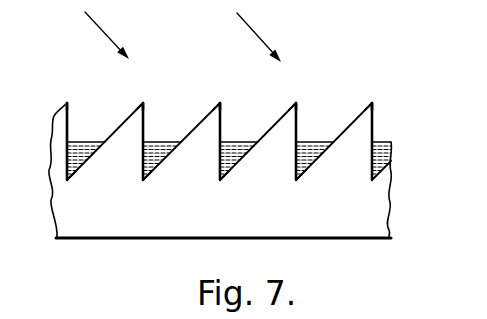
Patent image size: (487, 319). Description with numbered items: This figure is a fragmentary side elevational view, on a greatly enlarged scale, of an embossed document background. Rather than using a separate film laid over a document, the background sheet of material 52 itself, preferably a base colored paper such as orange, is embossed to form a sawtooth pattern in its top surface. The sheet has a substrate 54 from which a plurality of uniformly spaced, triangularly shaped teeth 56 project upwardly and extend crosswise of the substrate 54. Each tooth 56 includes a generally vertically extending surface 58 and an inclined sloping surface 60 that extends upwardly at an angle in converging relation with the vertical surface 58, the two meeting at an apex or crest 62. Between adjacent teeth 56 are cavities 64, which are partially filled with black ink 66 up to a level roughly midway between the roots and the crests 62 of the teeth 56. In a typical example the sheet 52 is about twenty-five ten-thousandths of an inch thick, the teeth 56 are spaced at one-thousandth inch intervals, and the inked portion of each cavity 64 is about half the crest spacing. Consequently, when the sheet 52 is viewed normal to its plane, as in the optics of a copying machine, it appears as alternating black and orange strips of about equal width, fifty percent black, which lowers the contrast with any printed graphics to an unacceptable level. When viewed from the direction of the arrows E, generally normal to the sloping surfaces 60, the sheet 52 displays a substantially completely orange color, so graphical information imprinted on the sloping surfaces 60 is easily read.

The background sheet of material 52 is at (108, 270).
The substrate 54 is at (323, 222).
The teeth 56 is at (187, 172).
The vertically extending surface 58 is at (77, 113).
The inclined sloping surface 60 is at (64, 104).
The crest 62 is at (66, 102).
The cavities 64 is at (99, 117).
The black ink 66 is at (78, 133).
The arrows indicating viewing direction E is at (115, 32).